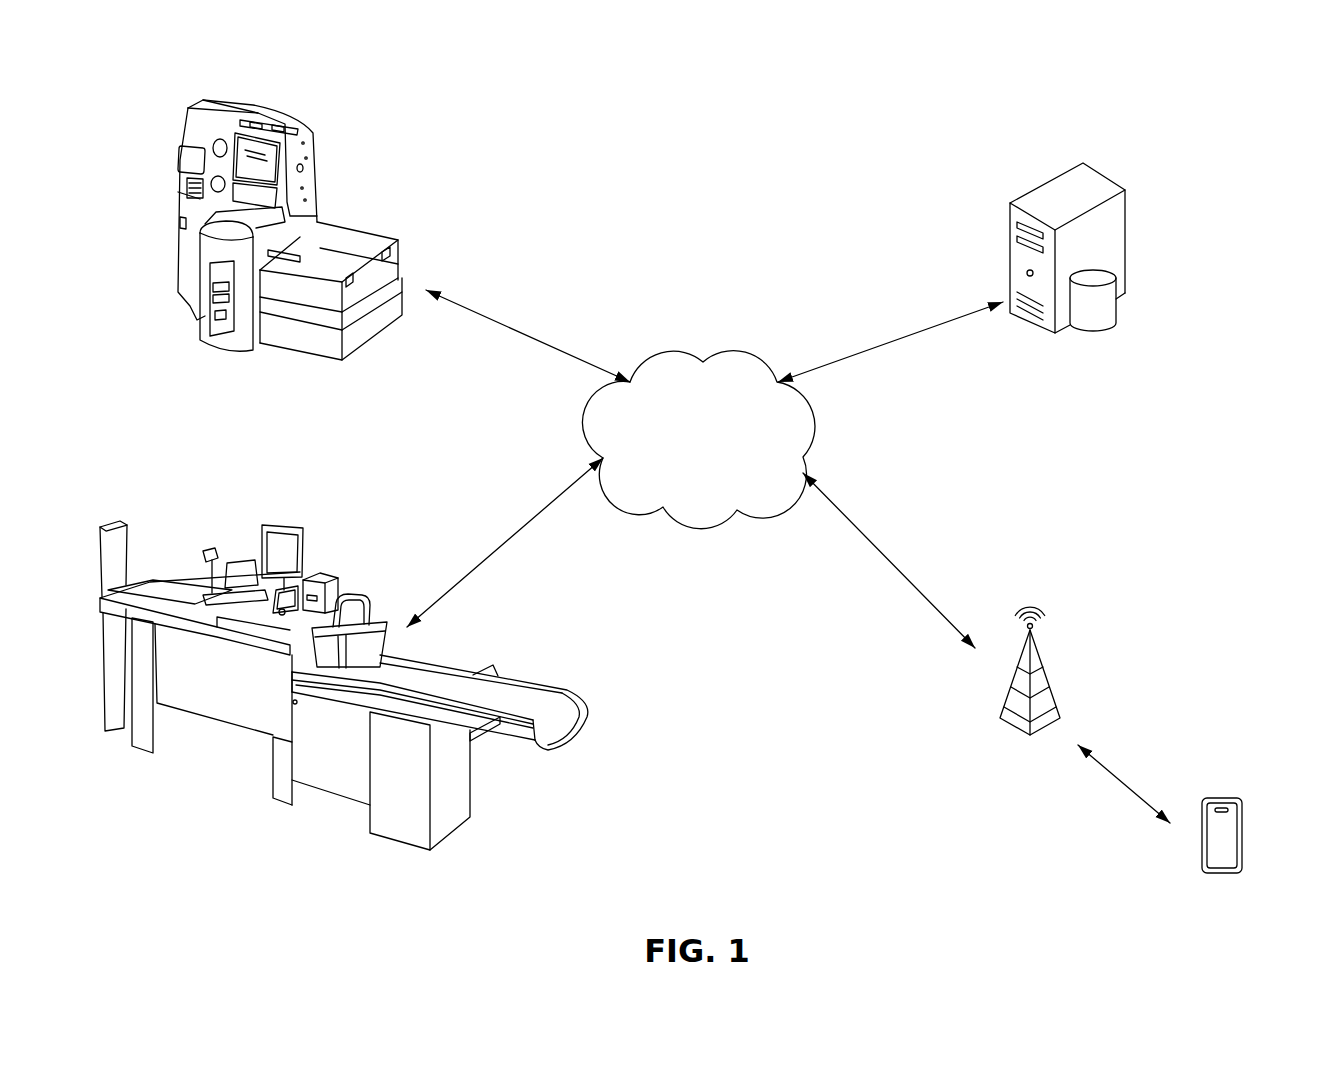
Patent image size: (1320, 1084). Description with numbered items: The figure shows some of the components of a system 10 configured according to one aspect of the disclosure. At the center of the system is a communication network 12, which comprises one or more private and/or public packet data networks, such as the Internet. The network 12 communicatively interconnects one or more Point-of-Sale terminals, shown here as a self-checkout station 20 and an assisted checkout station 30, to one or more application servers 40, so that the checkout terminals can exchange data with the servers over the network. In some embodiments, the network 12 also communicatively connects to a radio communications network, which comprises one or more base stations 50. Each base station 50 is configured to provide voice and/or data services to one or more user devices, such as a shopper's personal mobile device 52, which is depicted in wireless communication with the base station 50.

The system 10 is at (1224, 98).
The communication network 12 is at (690, 480).
The self-checkout (SCO) station 20 is at (340, 150).
The assisted checkout (ACO) station 30 is at (318, 517).
The application server 40 is at (1022, 170).
The base station 50 is at (1038, 662).
The personal mobile device 52 is at (1240, 799).